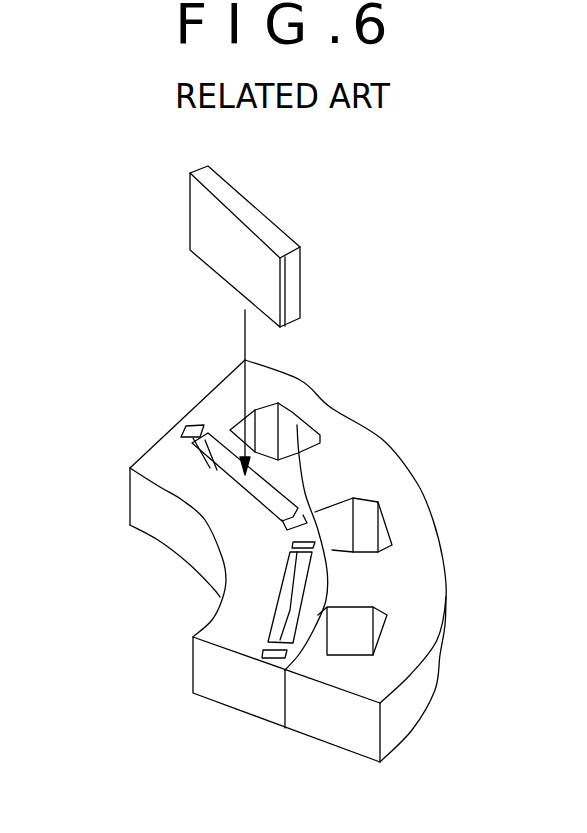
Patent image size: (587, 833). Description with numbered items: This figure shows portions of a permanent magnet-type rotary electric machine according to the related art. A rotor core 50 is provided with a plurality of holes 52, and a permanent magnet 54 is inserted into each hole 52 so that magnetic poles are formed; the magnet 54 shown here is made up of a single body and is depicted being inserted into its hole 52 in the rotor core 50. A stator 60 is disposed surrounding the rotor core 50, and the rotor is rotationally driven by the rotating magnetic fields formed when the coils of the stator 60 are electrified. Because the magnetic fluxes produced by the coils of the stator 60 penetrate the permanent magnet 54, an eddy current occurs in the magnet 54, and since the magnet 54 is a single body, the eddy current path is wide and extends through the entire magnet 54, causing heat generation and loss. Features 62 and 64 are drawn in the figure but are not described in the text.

The rotor core 50 is at (237, 710).
The hole 52 is at (228, 458).
The permanent magnet 54 is at (257, 203).
The stator 60 is at (385, 443).
The boundary between core portions 62 is at (285, 728).
The hole 64 is at (292, 412).